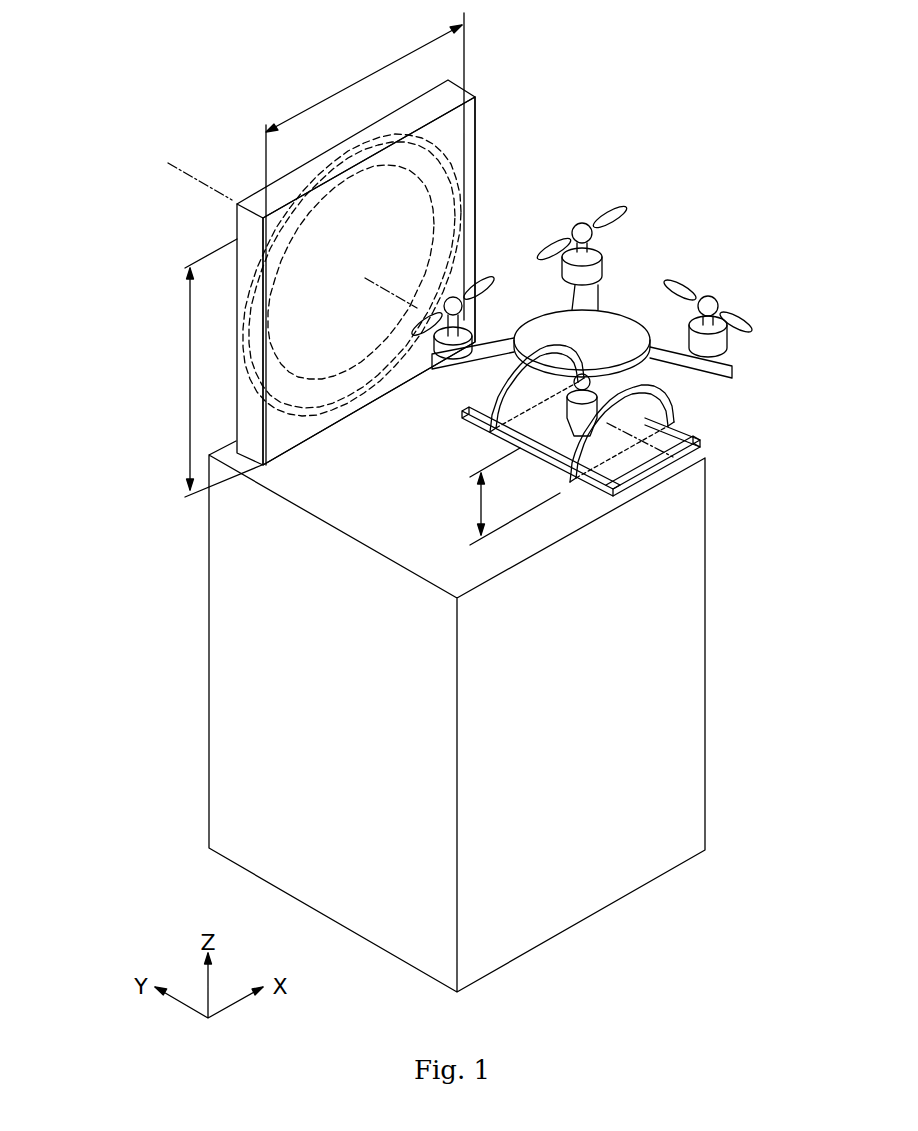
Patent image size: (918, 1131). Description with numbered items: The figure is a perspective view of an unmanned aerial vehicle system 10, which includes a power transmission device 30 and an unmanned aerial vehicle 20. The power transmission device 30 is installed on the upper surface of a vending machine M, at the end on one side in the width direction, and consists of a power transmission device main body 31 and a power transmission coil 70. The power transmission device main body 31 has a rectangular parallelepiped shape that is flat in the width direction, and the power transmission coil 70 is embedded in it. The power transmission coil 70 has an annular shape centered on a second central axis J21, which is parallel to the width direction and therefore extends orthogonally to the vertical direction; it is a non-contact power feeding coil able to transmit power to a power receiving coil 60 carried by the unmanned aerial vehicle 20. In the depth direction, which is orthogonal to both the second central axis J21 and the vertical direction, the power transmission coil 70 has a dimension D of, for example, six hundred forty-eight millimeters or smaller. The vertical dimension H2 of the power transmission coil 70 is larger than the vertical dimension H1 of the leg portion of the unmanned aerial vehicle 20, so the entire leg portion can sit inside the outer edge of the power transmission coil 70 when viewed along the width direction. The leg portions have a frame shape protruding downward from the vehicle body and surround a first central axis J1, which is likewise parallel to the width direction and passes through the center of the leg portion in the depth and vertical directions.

The unmanned aerial vehicle system 10 is at (673, 83).
The unmanned aerial vehicle 20 is at (581, 335).
The power transmission device 30 is at (393, 239).
The power transmission device main body 31 is at (408, 118).
The power receiving coil 60 is at (497, 385).
The power transmission coil 70 is at (452, 163).
The first central axis J1 is at (675, 452).
The second central axis J21 is at (393, 280).
The vending machine M is at (648, 658).
The dimension of the power transmission coil in the depth direction D is at (365, 239).
The dimension of the leg portion in the vertical direction H1 is at (501, 496).
The dimension of the power transmission coil in the vertical direction H2 is at (209, 368).